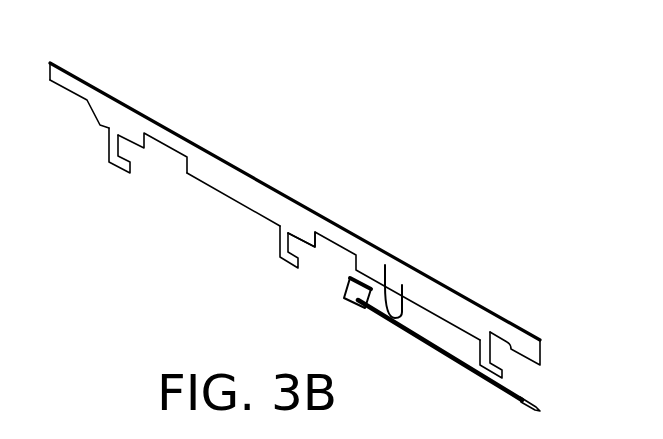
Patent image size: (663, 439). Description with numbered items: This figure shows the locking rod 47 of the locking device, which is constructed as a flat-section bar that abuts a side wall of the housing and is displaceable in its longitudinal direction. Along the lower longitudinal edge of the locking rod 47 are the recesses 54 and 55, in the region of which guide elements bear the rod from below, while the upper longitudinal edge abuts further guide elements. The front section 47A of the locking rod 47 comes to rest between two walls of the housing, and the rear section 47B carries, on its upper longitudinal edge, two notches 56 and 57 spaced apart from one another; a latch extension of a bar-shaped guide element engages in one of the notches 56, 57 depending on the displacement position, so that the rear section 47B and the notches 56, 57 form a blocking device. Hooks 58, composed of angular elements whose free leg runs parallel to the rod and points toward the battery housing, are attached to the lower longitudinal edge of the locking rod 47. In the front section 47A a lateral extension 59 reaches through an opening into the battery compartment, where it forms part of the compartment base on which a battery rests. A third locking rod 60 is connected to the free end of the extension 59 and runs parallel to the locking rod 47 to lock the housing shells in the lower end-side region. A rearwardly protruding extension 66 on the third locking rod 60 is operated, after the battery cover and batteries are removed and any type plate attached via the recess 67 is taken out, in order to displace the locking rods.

The locking rod 47 is at (237, 198).
The front section of the locking rod 47A is at (467, 308).
The rear section of the locking rod 47B is at (68, 80).
The recess 54 is at (173, 162).
The recess 55 is at (328, 253).
The notch 56 is at (57, 62).
The notch 57 is at (72, 67).
The hooks 58 is at (115, 165).
The lateral extension 59 is at (357, 292).
The third locking rod 60 is at (445, 358).
The rearwardly protruding extension 66 is at (518, 392).
The recess 67 is at (450, 5).